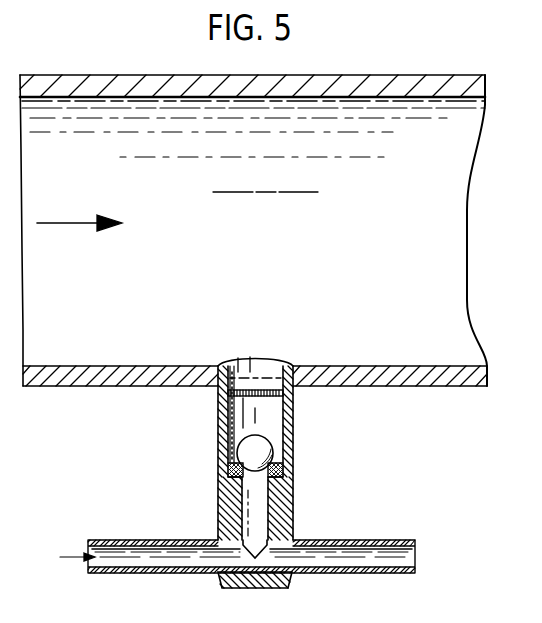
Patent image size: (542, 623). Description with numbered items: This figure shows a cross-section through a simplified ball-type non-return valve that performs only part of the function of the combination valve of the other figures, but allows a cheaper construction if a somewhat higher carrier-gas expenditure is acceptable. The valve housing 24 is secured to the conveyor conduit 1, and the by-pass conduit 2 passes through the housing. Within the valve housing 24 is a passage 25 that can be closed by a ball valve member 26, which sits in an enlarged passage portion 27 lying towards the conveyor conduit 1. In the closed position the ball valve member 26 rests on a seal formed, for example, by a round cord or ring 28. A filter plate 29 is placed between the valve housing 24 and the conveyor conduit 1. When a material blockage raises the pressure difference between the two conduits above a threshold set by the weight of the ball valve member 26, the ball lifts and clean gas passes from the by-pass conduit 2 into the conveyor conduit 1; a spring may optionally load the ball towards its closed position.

The conveyor conduit 1 is at (252, 264).
The by-pass conduit 2 is at (165, 565).
The valve housing 24 is at (286, 514).
The passage 25 is at (245, 509).
The ball valve member 26 is at (238, 455).
The enlarged passage portion 27 is at (238, 424).
The round cord or ring 28 is at (282, 470).
The filter plate 29 is at (268, 397).